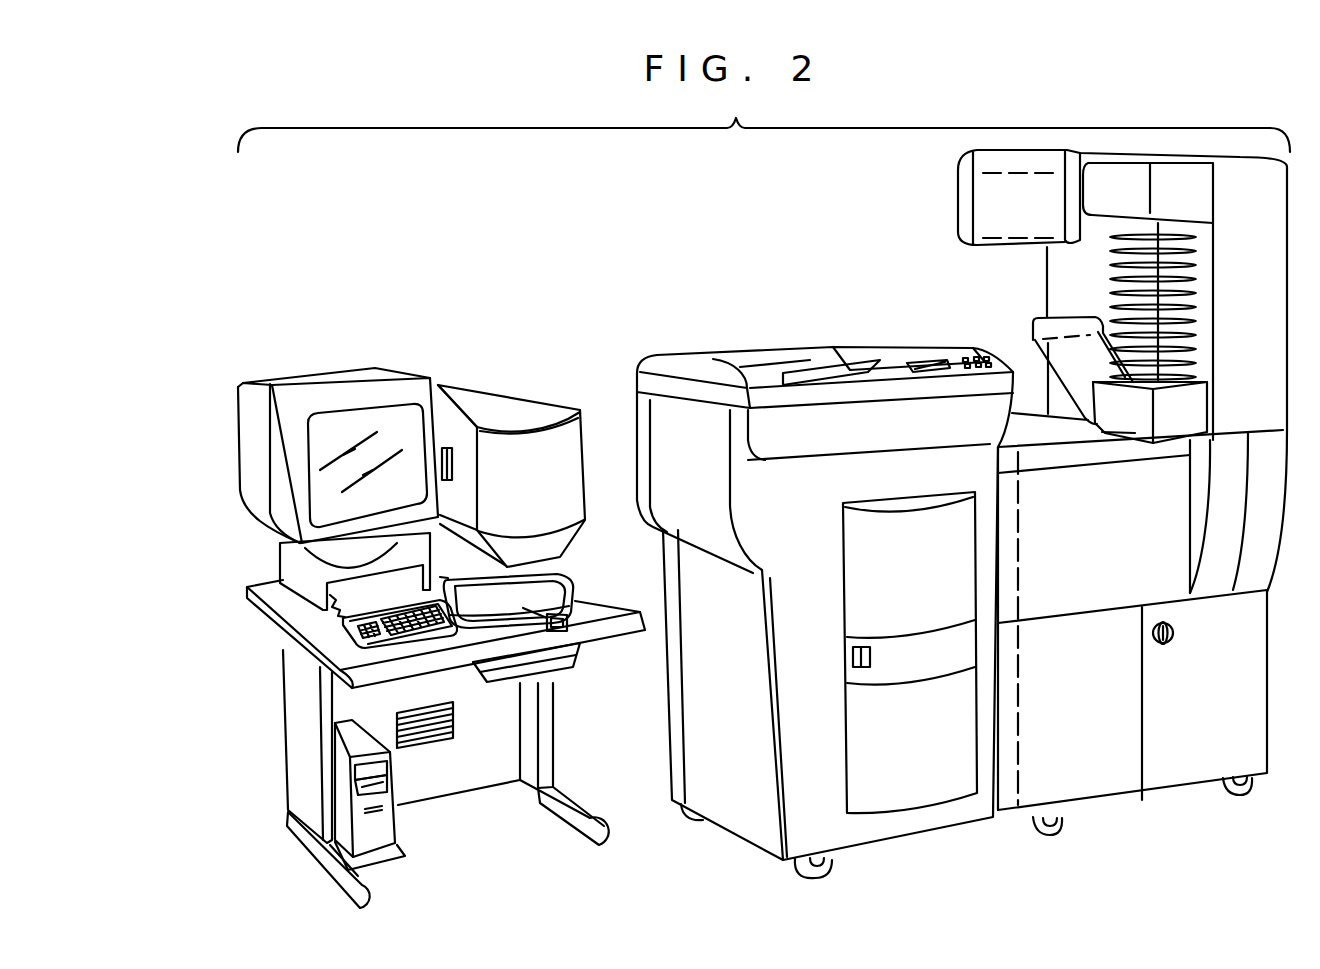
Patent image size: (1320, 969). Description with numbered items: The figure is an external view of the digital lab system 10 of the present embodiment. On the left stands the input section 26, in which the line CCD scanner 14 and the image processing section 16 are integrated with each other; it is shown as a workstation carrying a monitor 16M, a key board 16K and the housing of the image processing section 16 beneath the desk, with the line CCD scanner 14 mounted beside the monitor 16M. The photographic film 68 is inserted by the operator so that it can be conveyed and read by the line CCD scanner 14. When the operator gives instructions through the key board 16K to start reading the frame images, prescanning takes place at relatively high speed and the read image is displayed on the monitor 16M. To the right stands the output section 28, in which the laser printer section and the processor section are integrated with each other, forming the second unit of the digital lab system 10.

The digital lab system 10 is at (528, 235).
The input section 26 is at (318, 348).
The monitor 16M is at (283, 425).
The key board 16K is at (345, 618).
The image processing section 16 is at (403, 825).
The line CCD scanner 14 is at (552, 392).
The photographic film 68 is at (556, 578).
The output section 28 is at (775, 281).